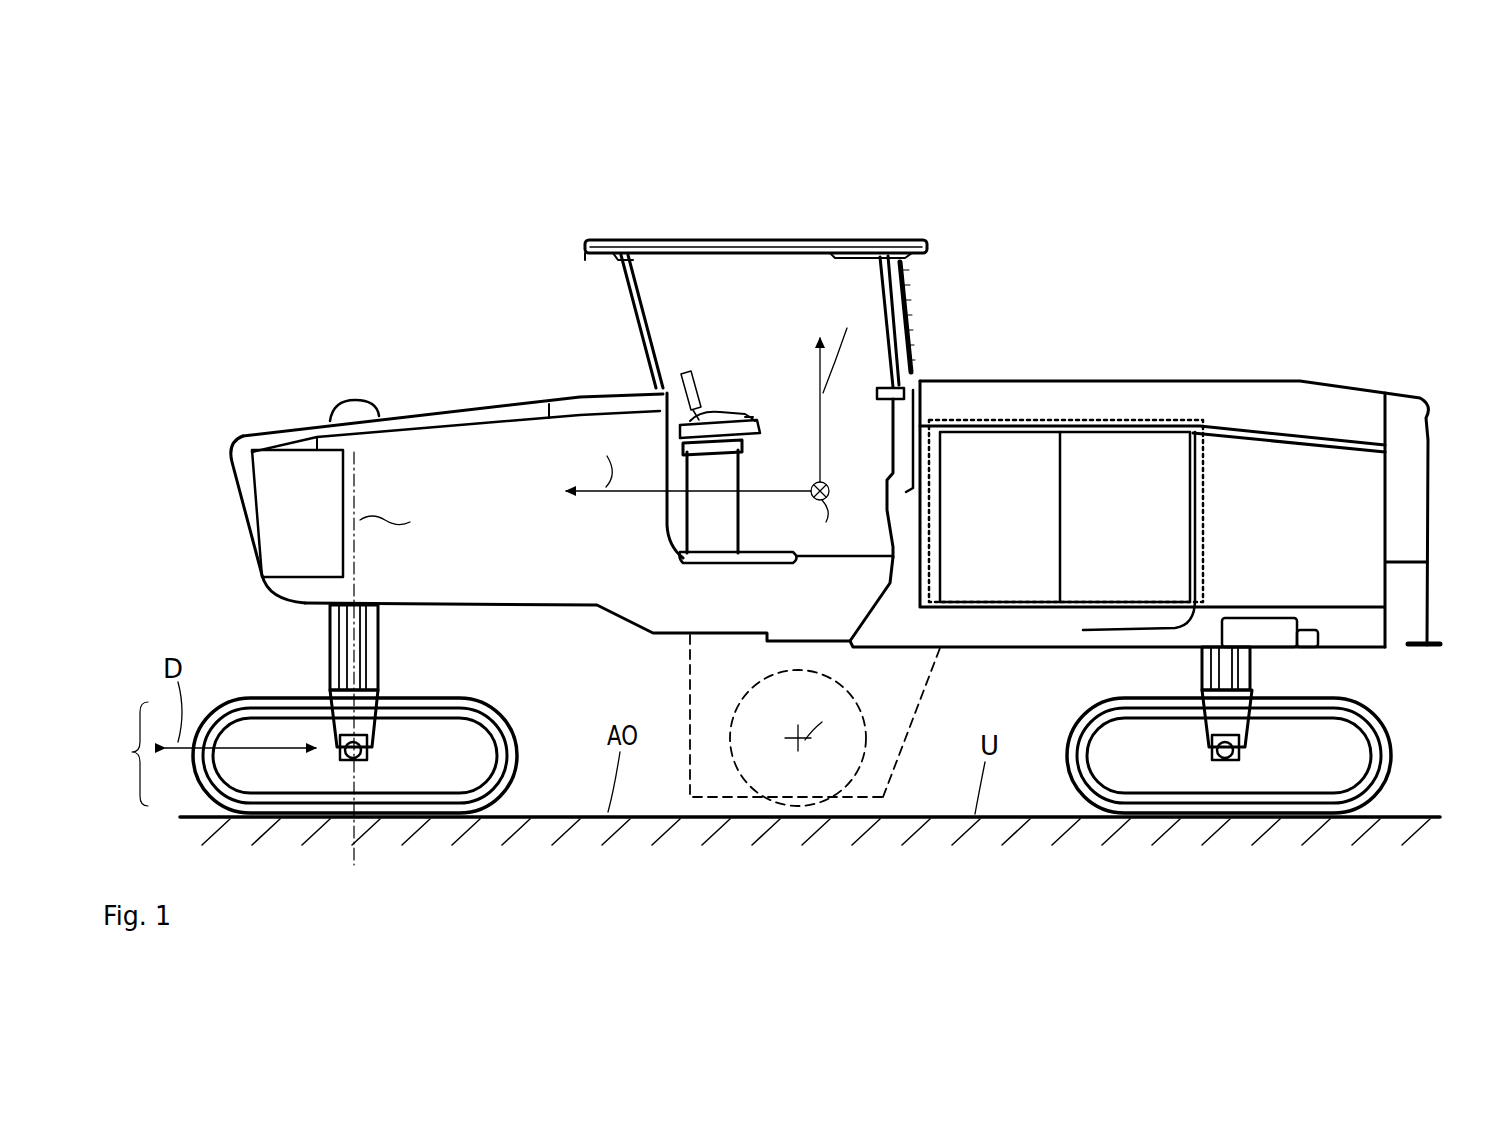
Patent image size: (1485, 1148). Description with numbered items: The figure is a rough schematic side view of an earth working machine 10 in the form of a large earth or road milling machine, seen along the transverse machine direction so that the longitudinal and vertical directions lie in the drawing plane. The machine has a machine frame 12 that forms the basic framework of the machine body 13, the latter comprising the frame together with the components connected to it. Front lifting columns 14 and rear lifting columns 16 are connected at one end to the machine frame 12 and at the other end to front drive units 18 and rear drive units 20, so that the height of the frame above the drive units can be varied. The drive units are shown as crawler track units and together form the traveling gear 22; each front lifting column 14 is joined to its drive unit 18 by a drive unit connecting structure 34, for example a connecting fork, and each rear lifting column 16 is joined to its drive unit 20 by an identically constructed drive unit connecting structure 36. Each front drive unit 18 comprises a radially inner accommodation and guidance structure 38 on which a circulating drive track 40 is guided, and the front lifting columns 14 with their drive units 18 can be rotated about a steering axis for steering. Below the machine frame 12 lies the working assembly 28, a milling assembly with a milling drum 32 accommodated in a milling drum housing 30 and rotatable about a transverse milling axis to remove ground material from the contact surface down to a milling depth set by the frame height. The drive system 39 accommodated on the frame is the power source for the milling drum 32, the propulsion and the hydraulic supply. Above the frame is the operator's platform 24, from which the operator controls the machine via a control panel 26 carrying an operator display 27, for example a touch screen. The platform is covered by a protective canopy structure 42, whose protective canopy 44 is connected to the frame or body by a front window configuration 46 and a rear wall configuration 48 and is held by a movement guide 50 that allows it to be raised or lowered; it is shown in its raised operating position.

The earth working machine 10 is at (1222, 200).
The machine frame 12 is at (1275, 398).
The machine body 13 is at (1152, 536).
The front lifting columns 14 is at (368, 661).
The rear lifting columns 16 is at (1240, 670).
The front drive units 18 is at (235, 697).
The rear drive units 20 is at (1388, 720).
The traveling gear 22 is at (206, 754).
The operator's platform 24 is at (783, 265).
The control panel 26 is at (722, 416).
The operator display 27 is at (686, 368).
The working assembly 28 is at (686, 704).
The milling drum housing 30 is at (920, 720).
The milling drum 32 is at (806, 671).
The drive unit connecting structure 34 is at (338, 690).
The drive unit connecting structure 36 is at (1210, 690).
The accommodation and guidance structure 38 is at (466, 779).
The drive system 39 is at (1075, 420).
The drive track 40 is at (500, 714).
The protective canopy structure 42 is at (568, 180).
The protective canopy 44 is at (690, 236).
The front window configuration 46 is at (602, 330).
The rear wall configuration 48 is at (952, 322).
The movement guide 50 is at (868, 288).